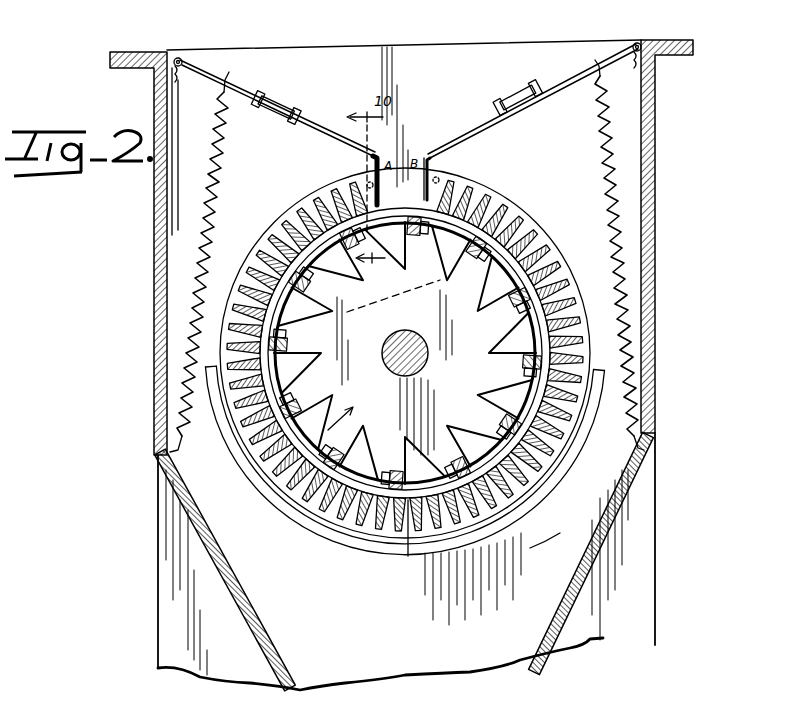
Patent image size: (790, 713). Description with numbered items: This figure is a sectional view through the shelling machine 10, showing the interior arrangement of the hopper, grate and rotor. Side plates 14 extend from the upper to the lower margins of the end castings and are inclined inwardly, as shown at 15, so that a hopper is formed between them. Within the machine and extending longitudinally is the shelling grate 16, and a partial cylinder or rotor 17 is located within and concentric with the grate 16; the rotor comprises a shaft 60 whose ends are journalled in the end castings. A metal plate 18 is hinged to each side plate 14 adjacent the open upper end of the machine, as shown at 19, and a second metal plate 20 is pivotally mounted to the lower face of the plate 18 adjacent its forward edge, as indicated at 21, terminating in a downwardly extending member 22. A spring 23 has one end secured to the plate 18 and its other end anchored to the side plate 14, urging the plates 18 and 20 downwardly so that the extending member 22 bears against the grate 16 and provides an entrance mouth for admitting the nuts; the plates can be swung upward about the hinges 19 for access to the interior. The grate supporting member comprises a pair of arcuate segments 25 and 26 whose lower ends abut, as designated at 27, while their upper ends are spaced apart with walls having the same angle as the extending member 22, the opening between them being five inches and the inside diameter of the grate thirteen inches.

The shelling machine 10 is at (660, 232).
The side plates 14 is at (656, 160).
The inwardly inclined portion of side plate 15 is at (246, 628).
The shelling grate 16 is at (542, 198).
The partial cylinder or rotor 17 is at (300, 452).
The metal plate 18 is at (216, 72).
The hinge 19 is at (176, 58).
The second metal plate 20 is at (332, 125).
The pivot 21 is at (292, 102).
The downwardly extending member 22 is at (412, 158).
The spring 23 is at (222, 208).
The arcuate segment 25 is at (342, 540).
The arcuate segment 26 is at (520, 508).
The abutting relationship of segments 27 is at (408, 556).
The shaft 60 is at (398, 340).